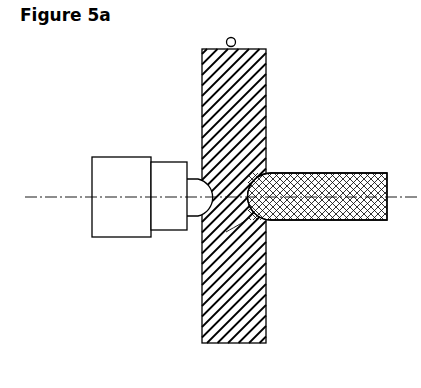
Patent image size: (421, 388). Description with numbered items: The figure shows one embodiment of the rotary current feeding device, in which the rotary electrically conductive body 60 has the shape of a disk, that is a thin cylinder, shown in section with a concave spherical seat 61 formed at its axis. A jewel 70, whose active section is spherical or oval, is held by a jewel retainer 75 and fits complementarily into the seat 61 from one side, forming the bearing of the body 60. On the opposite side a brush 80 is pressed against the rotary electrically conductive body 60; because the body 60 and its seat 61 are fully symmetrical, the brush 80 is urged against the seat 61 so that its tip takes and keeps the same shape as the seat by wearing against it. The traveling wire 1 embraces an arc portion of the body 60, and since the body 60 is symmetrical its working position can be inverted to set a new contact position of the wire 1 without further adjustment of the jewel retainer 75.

The traveling wire 1 is at (228, 39).
The rotary electrically conductive body 60 is at (217, 90).
The seat 61 is at (202, 220).
The jewel 70 is at (196, 188).
The jewel retainer 75 is at (168, 207).
The brush 80 is at (366, 180).